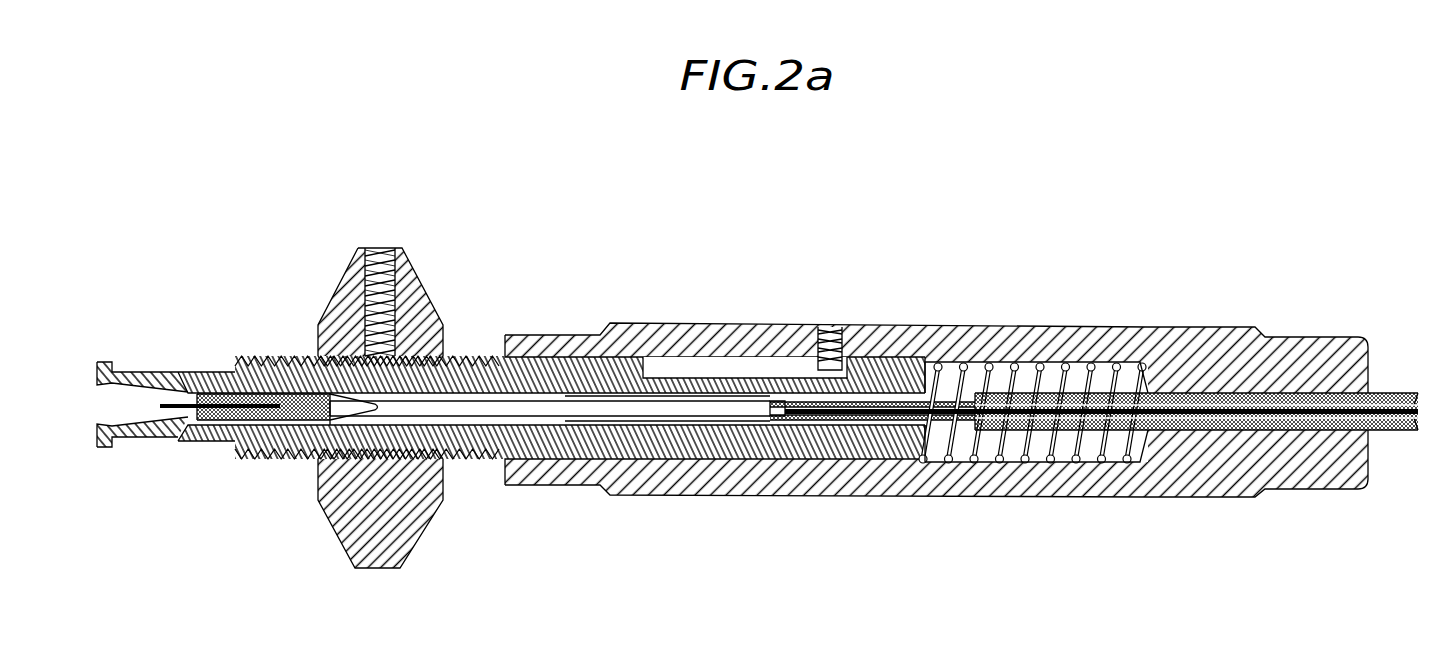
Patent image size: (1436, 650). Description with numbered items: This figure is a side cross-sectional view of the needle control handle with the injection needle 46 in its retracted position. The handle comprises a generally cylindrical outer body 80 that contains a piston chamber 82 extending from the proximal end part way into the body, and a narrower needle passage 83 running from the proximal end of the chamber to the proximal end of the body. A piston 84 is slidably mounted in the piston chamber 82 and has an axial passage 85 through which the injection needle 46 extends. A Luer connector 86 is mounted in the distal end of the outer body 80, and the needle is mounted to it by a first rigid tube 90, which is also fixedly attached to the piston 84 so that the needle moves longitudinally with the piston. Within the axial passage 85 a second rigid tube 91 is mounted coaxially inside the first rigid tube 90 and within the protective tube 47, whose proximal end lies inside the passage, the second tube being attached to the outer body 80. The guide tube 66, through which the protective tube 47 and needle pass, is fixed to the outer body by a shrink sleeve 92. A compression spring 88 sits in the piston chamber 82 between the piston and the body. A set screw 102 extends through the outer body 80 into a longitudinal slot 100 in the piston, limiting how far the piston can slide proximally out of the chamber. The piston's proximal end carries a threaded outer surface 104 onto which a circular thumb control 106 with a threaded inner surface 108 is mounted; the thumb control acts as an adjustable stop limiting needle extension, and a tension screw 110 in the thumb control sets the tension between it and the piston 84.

The injection needle 46 is at (170, 405).
The protective tube 47 is at (783, 420).
The guide tube 66 is at (1398, 430).
The outer body 80 is at (563, 485).
The piston chamber 82 is at (985, 457).
The needle passage 83 is at (1200, 440).
The piston 84 is at (848, 447).
The axial passage 85 is at (452, 395).
The Luer connector 86 is at (152, 450).
The compression spring 88 is at (978, 375).
The first rigid tube 90 is at (490, 412).
The second rigid tube 91 is at (758, 410).
The shrink sleeve 92 is at (1393, 393).
The longitudinal slot 100 is at (712, 380).
The set screw 102 is at (830, 330).
The threaded outer surface 104 is at (478, 360).
The thumb control 106 is at (362, 553).
The threaded inner surface 108 is at (323, 465).
The tension screw 110 is at (382, 250).